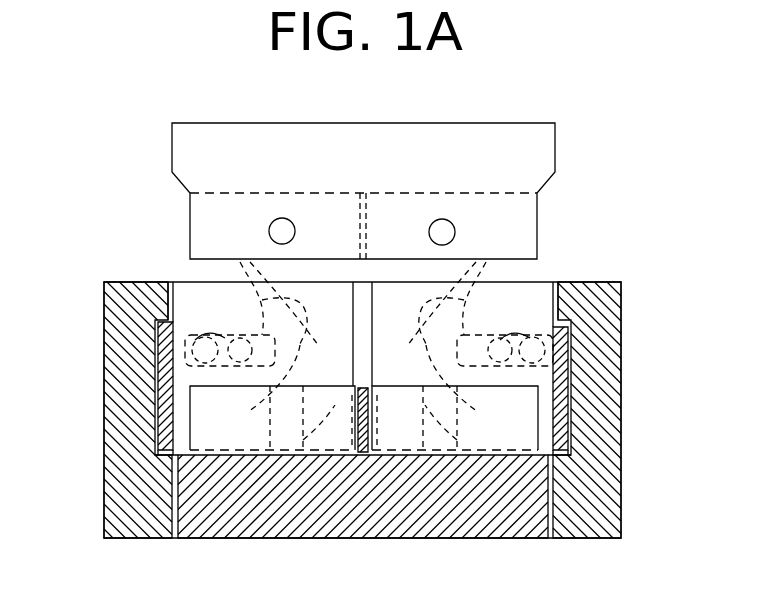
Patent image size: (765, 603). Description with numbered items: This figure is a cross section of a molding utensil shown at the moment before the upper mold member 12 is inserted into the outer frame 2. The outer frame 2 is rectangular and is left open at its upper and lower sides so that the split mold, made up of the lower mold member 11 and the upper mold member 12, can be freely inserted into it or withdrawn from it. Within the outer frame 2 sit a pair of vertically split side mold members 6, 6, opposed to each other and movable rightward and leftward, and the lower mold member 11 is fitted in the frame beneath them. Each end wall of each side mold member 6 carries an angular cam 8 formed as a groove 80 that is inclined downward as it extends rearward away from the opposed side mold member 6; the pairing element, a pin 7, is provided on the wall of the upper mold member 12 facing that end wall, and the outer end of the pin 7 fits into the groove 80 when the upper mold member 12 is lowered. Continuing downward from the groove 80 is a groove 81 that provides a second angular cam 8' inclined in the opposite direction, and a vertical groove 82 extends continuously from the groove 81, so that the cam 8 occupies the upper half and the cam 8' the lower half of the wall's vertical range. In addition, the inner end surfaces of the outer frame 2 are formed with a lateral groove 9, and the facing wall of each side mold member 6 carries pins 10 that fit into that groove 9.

The outer frame 2 is at (608, 302).
The side mold member 6 is at (180, 298).
The pin 7 is at (282, 231).
The angular cam 8 is at (363, 315).
The angular cam 8' is at (363, 376).
The lateral groove 9 is at (185, 353).
The pin 10 is at (218, 336).
The lower mold member 11 is at (527, 430).
The upper mold member 12 is at (525, 228).
The groove 80 is at (240, 262).
The groove 81 is at (364, 418).
The vertical groove 82 is at (408, 418).